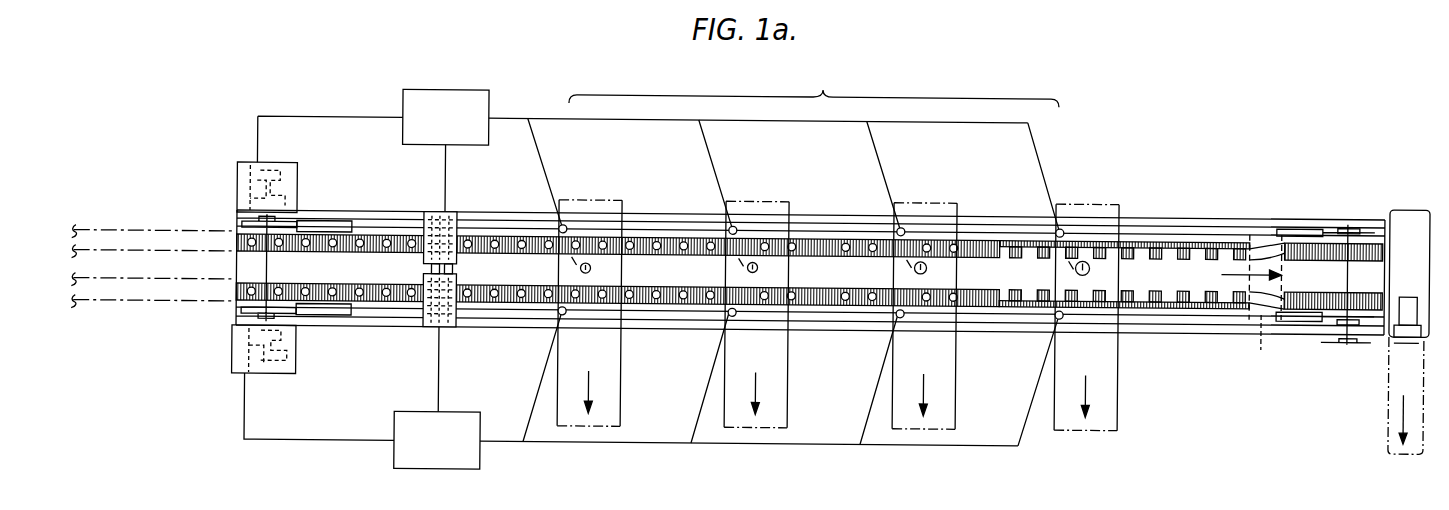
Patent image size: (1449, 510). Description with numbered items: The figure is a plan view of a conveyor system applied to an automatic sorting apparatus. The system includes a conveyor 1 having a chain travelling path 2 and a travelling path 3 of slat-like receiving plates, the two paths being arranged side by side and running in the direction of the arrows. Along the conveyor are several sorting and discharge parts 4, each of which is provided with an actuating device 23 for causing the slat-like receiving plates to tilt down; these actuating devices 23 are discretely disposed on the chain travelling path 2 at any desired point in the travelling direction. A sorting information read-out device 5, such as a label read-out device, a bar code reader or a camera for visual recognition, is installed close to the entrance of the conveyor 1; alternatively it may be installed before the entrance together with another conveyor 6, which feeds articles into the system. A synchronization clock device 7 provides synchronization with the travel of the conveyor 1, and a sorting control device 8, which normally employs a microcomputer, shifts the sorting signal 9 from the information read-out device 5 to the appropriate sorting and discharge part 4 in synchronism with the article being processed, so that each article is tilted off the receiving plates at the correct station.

The conveyor 1 is at (1179, 210).
The chain travelling path 2 is at (1255, 227).
The travelling path of slat-like receiving plates 3 is at (1306, 234).
The sorting and discharge part 4 is at (838, 249).
The sorting information read-out device 5 is at (430, 209).
The another conveyor 6 is at (165, 234).
The synchronization clock device 7 is at (236, 193).
The sorting control device 8 is at (488, 100).
The sorting signal 9 is at (1043, 164).
The actuating device 23 is at (1066, 223).